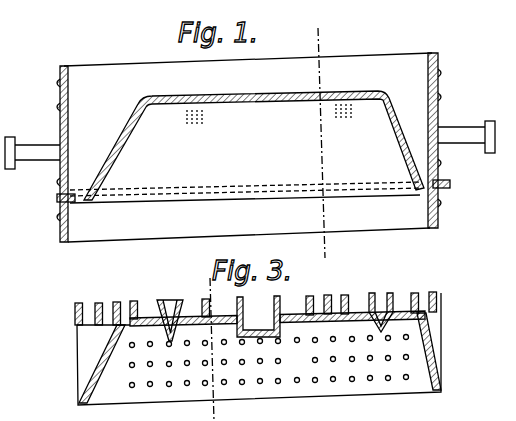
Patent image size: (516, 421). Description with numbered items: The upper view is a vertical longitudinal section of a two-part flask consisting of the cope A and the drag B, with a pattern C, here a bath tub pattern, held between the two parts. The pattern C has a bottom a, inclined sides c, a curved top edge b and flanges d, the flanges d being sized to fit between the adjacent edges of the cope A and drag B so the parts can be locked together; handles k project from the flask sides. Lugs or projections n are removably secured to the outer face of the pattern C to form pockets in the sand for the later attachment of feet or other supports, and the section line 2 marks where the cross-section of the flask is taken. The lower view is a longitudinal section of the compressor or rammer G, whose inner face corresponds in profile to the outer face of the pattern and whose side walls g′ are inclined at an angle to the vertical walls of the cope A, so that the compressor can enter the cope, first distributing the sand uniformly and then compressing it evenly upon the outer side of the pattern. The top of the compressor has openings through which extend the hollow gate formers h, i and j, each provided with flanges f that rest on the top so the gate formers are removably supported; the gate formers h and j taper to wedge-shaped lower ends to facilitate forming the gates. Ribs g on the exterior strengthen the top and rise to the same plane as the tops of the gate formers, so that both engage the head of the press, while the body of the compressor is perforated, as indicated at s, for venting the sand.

In FIG. 1, the cope A is at (59, 98).
In FIG. 1, the handle k is at (32, 145).
In FIG. 1, the bottom a is at (246, 98).
In FIG. 1, the inclined sides c is at (131, 140).
In FIG. 1, the pattern C is at (196, 159).
In FIG. 1, the lugs or projections n is at (200, 122).
In FIG. 1, the flanges d is at (58, 196).
In FIG. 1, the curved top edge b is at (89, 201).
In FIG. 1, the drag B is at (60, 218).
In FIG. 1, the section line 2— 2 is at (320, 147).
In FIG. 3, the compressor or rammer G is at (259, 349).
In FIG. 3, the side walls g′ is at (97, 357).
In FIG. 3, the flanges f is at (192, 317).
In FIG. 3, the ribs g is at (134, 302).
In FIG. 3, the gate former h is at (169, 300).
In FIG. 3, the gate former i is at (258, 316).
In FIG. 3, the gate former j is at (383, 296).
In FIG. 3, the perforations s is at (372, 375).